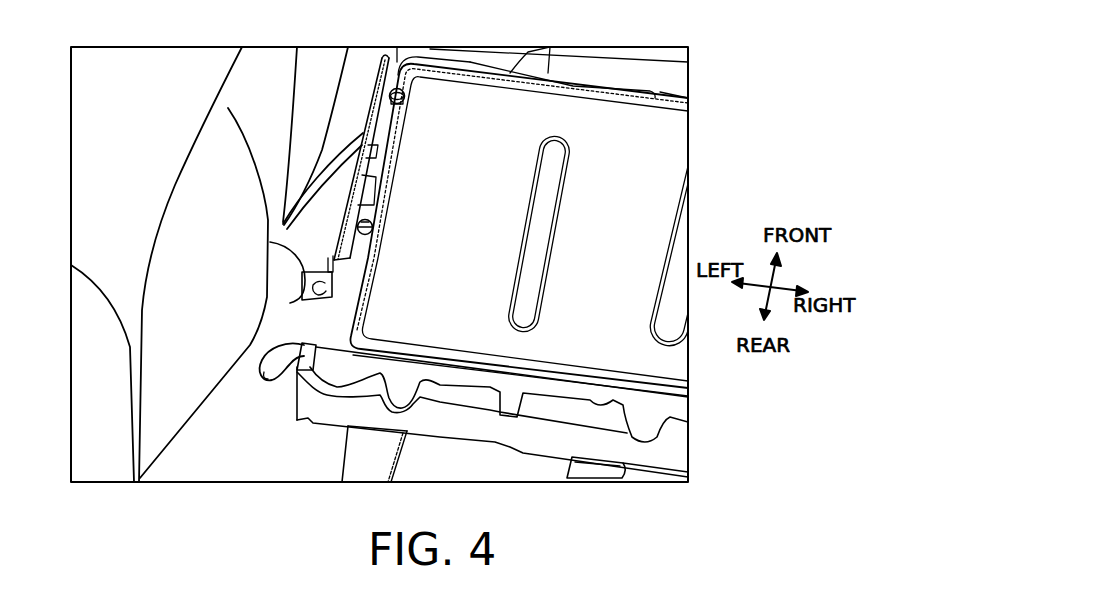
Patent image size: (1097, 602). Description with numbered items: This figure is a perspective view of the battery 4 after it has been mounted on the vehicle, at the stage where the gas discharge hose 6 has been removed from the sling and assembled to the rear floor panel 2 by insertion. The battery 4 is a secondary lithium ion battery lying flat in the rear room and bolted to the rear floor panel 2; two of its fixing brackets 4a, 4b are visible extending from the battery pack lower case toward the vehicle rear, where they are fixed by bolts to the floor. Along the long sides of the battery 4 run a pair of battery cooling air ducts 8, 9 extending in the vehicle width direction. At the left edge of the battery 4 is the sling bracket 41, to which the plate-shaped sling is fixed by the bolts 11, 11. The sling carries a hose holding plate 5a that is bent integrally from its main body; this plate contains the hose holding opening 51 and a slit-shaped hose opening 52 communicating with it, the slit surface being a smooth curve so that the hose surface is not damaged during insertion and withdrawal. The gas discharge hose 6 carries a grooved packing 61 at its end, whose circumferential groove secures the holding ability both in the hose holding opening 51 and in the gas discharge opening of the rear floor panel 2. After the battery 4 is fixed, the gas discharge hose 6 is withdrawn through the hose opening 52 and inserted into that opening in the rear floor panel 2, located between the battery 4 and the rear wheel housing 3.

The rear floor panel 2 is at (258, 460).
The rear wheel housing 3 is at (207, 198).
The battery 4 is at (642, 162).
The bracket 4a is at (368, 458).
The bracket 4b is at (579, 473).
The hose holding plate 5a is at (311, 270).
The gas discharge hose 6 is at (280, 350).
The battery cooling air duct 8 is at (676, 432).
The battery cooling air duct 9 is at (650, 97).
The bolt 11 is at (410, 90).
The sling bracket 41 is at (388, 103).
The hose holding opening 51 is at (322, 274).
The hose opening 52 is at (298, 305).
The grooved packing 61 is at (265, 378).